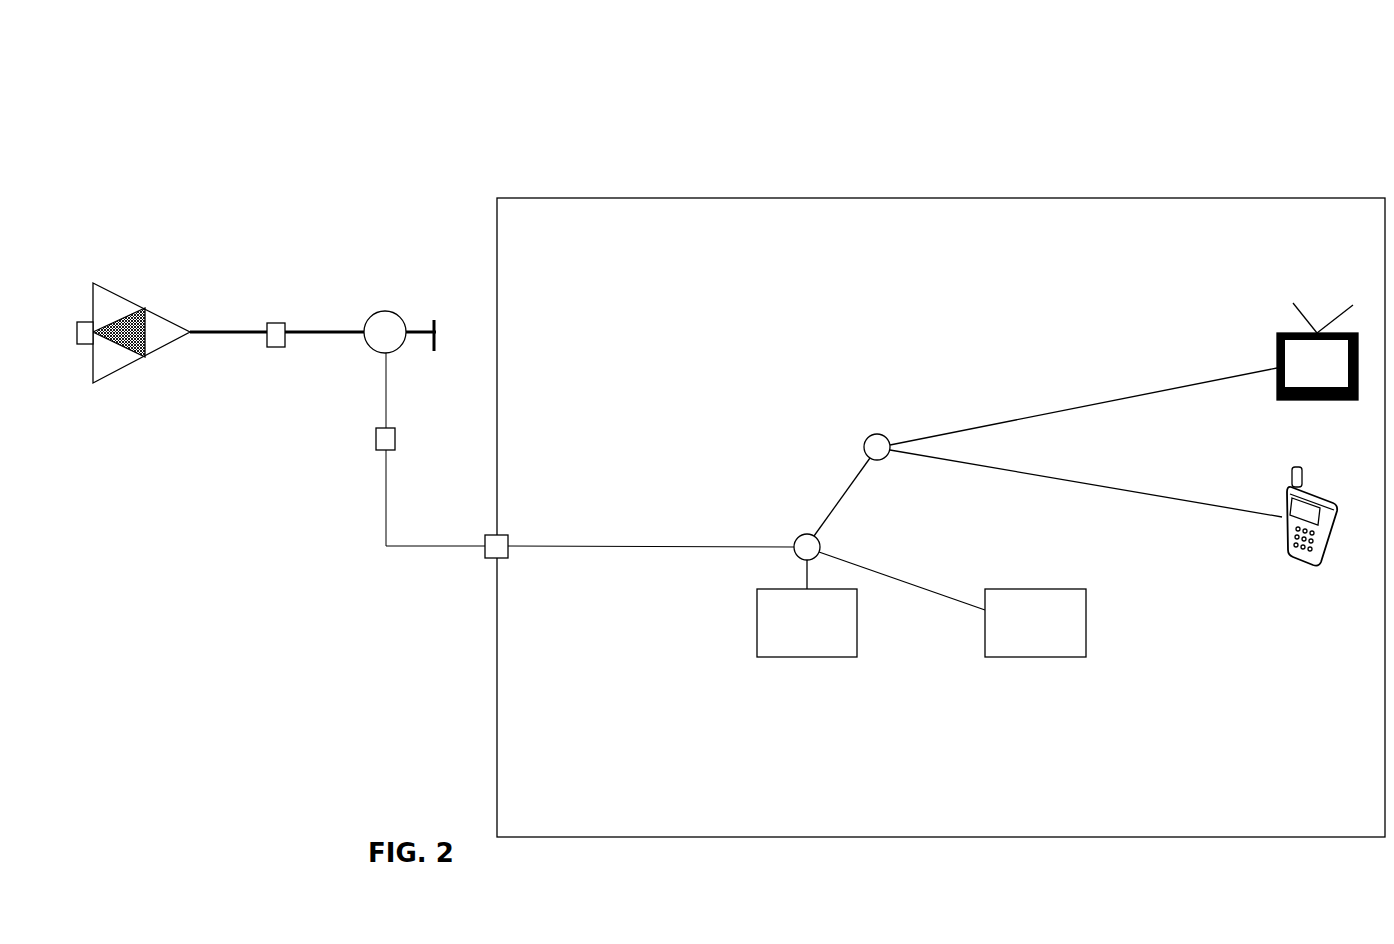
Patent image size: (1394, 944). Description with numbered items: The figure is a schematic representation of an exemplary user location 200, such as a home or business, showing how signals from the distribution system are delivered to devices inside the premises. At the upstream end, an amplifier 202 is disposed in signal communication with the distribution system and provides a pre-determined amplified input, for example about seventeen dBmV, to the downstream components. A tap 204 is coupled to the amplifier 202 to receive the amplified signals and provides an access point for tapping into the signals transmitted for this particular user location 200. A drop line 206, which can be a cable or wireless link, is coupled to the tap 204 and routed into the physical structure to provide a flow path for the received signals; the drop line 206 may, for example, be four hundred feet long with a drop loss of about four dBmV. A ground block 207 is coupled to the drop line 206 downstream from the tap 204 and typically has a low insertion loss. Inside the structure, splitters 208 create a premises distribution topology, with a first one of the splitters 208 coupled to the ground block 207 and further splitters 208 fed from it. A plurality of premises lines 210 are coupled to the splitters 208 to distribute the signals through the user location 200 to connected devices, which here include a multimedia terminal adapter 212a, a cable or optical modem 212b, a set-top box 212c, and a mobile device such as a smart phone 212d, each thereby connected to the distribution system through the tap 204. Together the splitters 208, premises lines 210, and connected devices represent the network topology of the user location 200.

The user location 200 is at (262, 68).
The amplifier 202 is at (123, 295).
The tap 204 is at (385, 311).
The drop line 206 is at (386, 508).
The ground block 207 is at (492, 533).
The splitter 208 is at (873, 433).
The premises line 210 is at (938, 597).
The multimedia terminal adapter 212a is at (757, 623).
The cable or optical modem 212b is at (1073, 589).
The set-top box 212c is at (1282, 335).
The smart phone 212d is at (1290, 487).